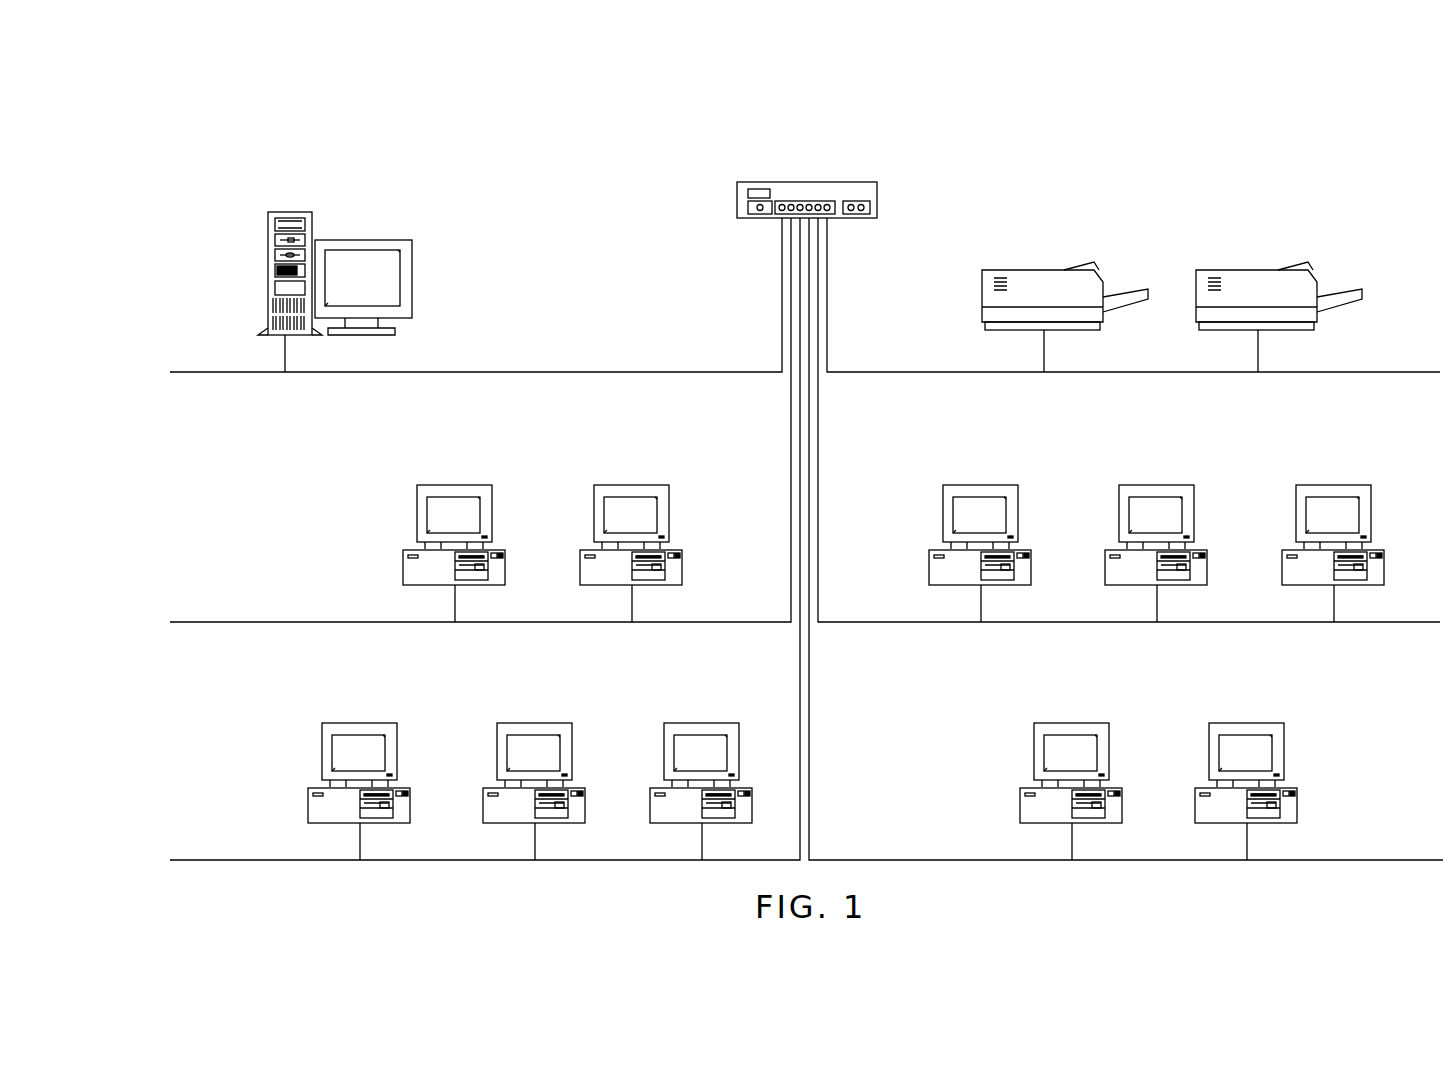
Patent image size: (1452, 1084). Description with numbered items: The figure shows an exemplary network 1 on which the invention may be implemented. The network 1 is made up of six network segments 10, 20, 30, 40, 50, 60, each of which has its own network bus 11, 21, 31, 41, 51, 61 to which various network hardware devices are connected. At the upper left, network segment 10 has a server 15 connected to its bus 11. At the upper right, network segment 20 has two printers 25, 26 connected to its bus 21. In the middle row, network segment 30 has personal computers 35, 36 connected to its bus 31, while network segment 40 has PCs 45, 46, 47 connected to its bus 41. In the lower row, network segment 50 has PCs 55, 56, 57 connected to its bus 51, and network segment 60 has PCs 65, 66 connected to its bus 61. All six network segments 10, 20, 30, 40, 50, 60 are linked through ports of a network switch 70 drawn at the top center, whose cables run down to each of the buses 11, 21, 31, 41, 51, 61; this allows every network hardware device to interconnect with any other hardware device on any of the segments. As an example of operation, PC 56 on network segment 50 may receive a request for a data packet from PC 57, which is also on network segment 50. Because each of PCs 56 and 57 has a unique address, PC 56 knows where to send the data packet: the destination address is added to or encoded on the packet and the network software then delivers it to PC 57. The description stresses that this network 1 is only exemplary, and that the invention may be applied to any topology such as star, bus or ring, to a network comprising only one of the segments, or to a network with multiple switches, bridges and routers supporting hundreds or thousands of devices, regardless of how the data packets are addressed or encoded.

The network 1 is at (611, 198).
The network segment 10 is at (476, 296).
The network bus 11 is at (526, 372).
The server 15 is at (301, 211).
The network segment 20 is at (1136, 295).
The network bus 21 is at (880, 372).
The printer 25 is at (1000, 270).
The printer 26 is at (1212, 270).
The network segment 30 is at (480, 420).
The network bus 31 is at (247, 622).
The personal computer 35 is at (497, 498).
The personal computer 36 is at (674, 498).
The network segment 40 is at (1131, 420).
The network bus 41 is at (1224, 620).
The personal computer 45 is at (1023, 498).
The personal computer 46 is at (1199, 498).
The personal computer 47 is at (1376, 500).
The network segment 50 is at (485, 541).
The network bus 51 is at (232, 860).
The personal computer 55 is at (402, 735).
The personal computer 56 is at (577, 735).
The personal computer 57 is at (744, 735).
The network segment 60 is at (1128, 539).
The network bus 61 is at (1349, 860).
The personal computer 65 is at (1114, 732).
The personal computer 66 is at (1290, 732).
The network switch 70 is at (833, 182).